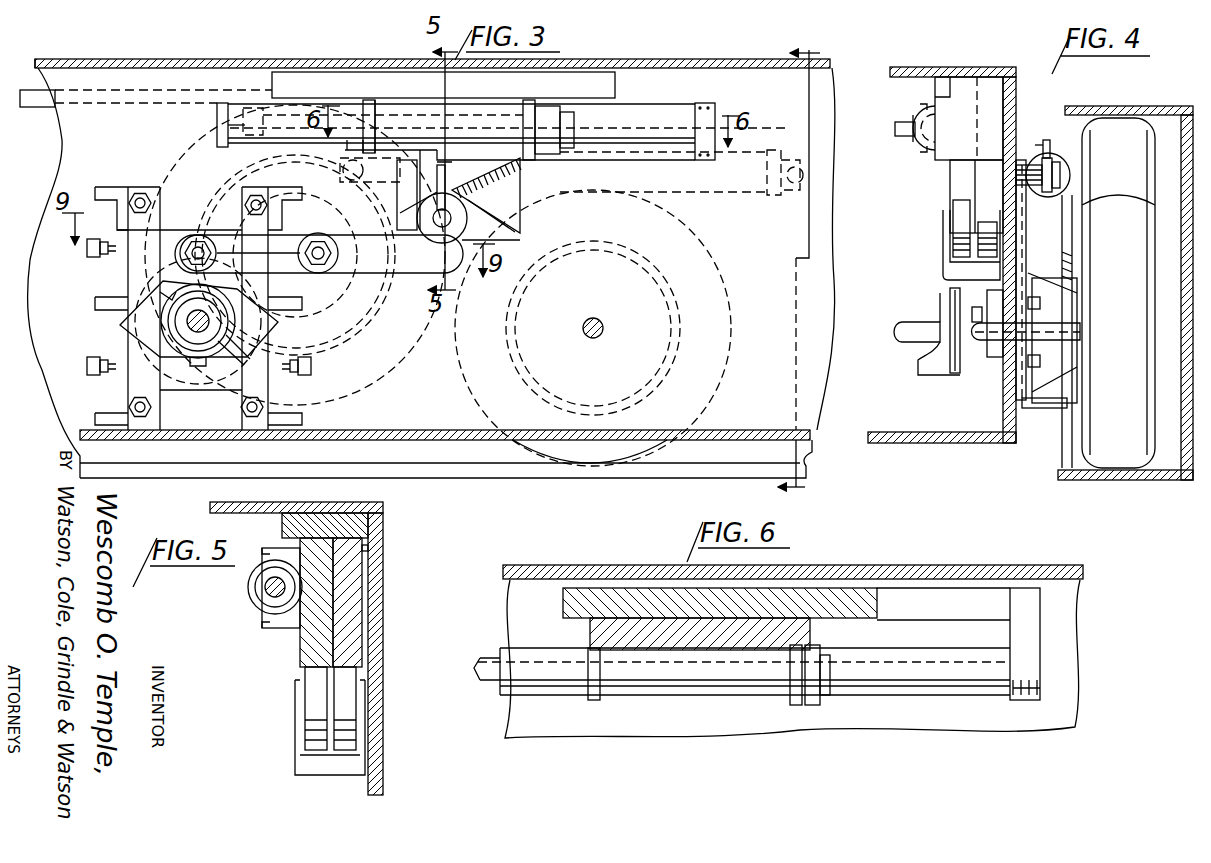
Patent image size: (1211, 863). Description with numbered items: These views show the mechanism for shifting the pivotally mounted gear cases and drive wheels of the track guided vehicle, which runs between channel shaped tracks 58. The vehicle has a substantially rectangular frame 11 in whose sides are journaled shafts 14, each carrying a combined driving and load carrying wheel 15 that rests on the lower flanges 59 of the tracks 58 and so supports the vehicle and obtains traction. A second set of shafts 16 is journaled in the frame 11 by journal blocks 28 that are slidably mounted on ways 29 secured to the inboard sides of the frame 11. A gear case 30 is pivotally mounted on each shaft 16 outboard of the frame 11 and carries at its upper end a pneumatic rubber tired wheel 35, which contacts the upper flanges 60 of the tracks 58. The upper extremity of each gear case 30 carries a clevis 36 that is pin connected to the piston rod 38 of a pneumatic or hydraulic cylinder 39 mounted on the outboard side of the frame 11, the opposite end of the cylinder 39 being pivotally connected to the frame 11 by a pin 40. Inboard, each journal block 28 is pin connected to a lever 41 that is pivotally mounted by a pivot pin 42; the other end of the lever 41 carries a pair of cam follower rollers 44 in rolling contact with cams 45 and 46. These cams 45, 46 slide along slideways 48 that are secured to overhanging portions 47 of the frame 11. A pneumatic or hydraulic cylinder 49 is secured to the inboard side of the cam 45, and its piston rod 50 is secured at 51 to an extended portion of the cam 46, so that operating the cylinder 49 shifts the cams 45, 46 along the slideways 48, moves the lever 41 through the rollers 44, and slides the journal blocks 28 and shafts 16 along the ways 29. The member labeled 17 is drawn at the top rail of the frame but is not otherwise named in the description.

In FIG. 3, the frame 11 is at (72, 125).
In FIG. 4, the frame 11 is at (903, 425).
In FIG. 5, the frame 11 is at (380, 620).
In FIG. 6, the frame 11 is at (520, 612).
In FIG. 3, the shafts 14 is at (588, 320).
In FIG. 4, the shafts 14 is at (993, 335).
In FIG. 3, the combined driving and load carrying wheel 15 is at (460, 367).
In FIG. 4, the combined driving and load carrying wheel 15 is at (1095, 415).
In FIG. 3, the shafts 16 is at (192, 318).
In FIG. 4, the shafts 16 is at (908, 322).
In FIG. 3, the top rail 17 is at (600, 62).
In FIG. 3, the journal blocks 28 is at (168, 245).
In FIG. 3, the ways 29 is at (250, 195).
In FIG. 4, the gear case 30 is at (1062, 246).
In FIG. 4, the pneumatic rubber tired wheel 35 is at (1136, 130).
In FIG. 3, the clevis 36 is at (350, 172).
In FIG. 3, the piston rod 38 is at (486, 188).
In FIG. 3, the pneumatic or hydraulic cylinder 39 is at (656, 188).
In FIG. 4, the pneumatic or hydraulic cylinder 39 is at (1062, 156).
In FIG. 4, the pin 40 is at (1062, 176).
In FIG. 3, the lever 41 is at (372, 298).
In FIG. 4, the lever 41 is at (952, 268).
In FIG. 5, the lever 41 is at (322, 768).
In FIG. 3, the pivot pin 42 is at (318, 246).
In FIG. 3, the cam follower rollers 44 is at (512, 243).
In FIG. 4, the cam follower rollers 44 is at (990, 236).
In FIG. 5, the cam follower rollers 44 is at (345, 700).
In FIG. 3, the cam 45 is at (446, 256).
In FIG. 4, the cam 45 is at (960, 177).
In FIG. 5, the cam 45 is at (310, 648).
In FIG. 6, the cam 45 is at (607, 630).
In FIG. 3, the cam 46 is at (515, 212).
In FIG. 4, the cam 46 is at (985, 189).
In FIG. 5, the cam 46 is at (352, 650).
In FIG. 6, the cam 46 is at (905, 600).
In FIG. 4, the overhanging portions 47 is at (943, 67).
In FIG. 5, the overhanging portions 47 is at (213, 507).
In FIG. 3, the slideways 48 is at (318, 75).
In FIG. 5, the slideways 48 is at (292, 522).
In FIG. 3, the pneumatic or hydraulic cylinder 49 is at (405, 110).
In FIG. 4, the pneumatic or hydraulic cylinder 49 is at (918, 144).
In FIG. 5, the pneumatic or hydraulic cylinder 49 is at (255, 588).
In FIG. 6, the pneumatic or hydraulic cylinder 49 is at (650, 688).
In FIG. 3, the piston rod 50 is at (645, 125).
In FIG. 5, the piston rod 50 is at (276, 594).
In FIG. 6, the piston rod 50 is at (892, 654).
In FIG. 3, the securing point 51 is at (706, 120).
In FIG. 4, the securing point 51 is at (918, 128).
In FIG. 6, the securing point 51 is at (1018, 674).
In FIG. 3, the tracks 58 is at (443, 457).
In FIG. 4, the tracks 58 is at (1180, 253).
In FIG. 3, the lower flanges 59 is at (481, 478).
In FIG. 4, the lower flanges 59 is at (1100, 480).
In FIG. 3, the upper flanges 60 is at (38, 97).
In FIG. 4, the upper flanges 60 is at (1120, 99).